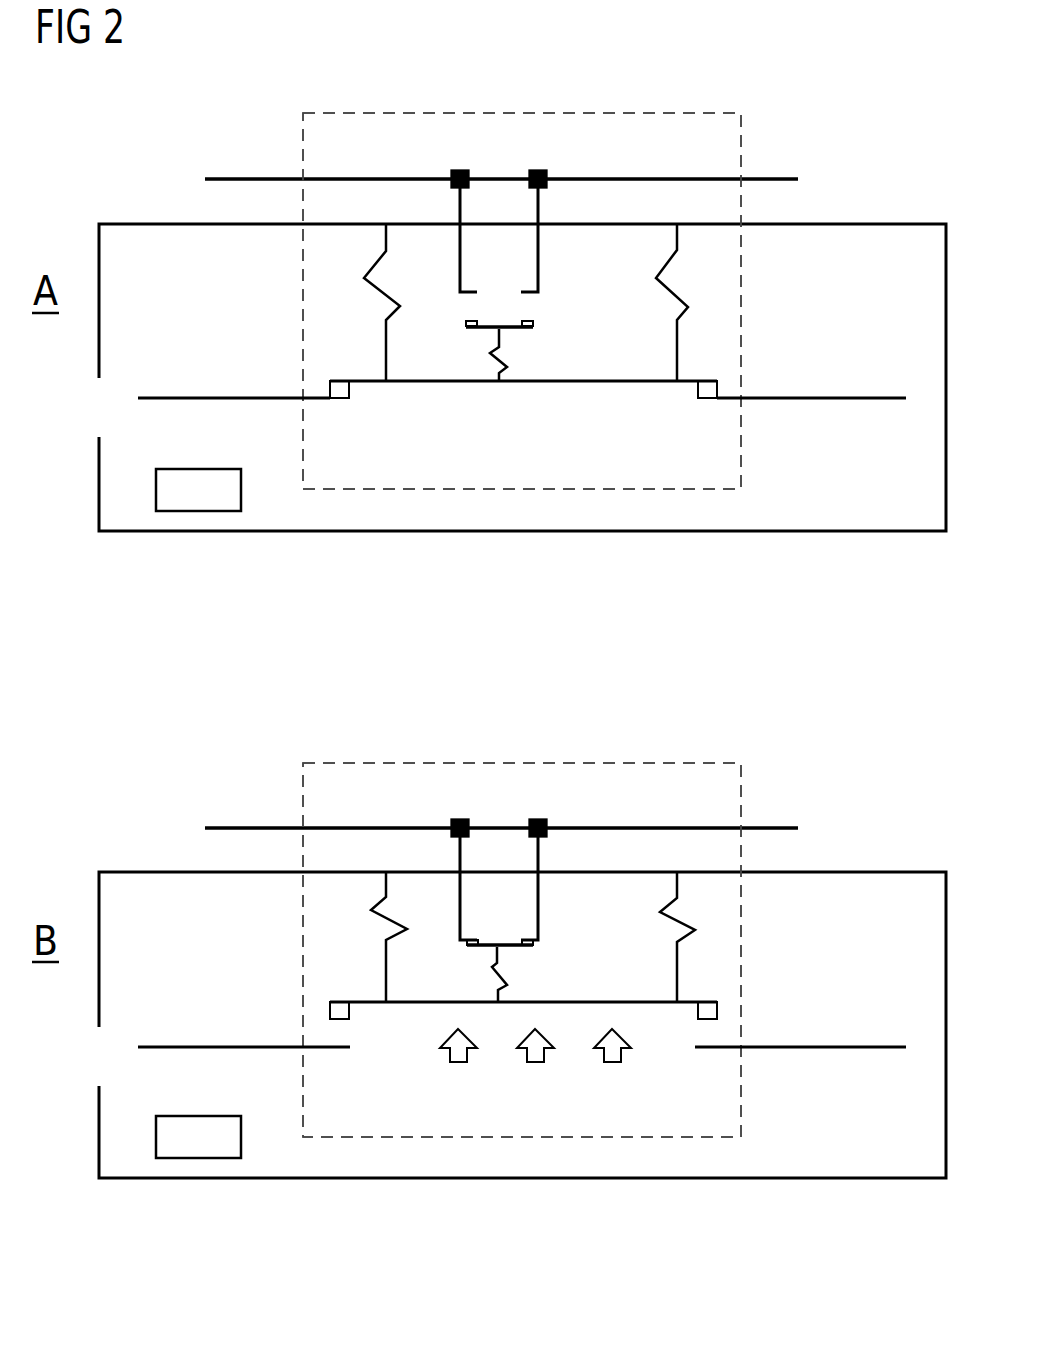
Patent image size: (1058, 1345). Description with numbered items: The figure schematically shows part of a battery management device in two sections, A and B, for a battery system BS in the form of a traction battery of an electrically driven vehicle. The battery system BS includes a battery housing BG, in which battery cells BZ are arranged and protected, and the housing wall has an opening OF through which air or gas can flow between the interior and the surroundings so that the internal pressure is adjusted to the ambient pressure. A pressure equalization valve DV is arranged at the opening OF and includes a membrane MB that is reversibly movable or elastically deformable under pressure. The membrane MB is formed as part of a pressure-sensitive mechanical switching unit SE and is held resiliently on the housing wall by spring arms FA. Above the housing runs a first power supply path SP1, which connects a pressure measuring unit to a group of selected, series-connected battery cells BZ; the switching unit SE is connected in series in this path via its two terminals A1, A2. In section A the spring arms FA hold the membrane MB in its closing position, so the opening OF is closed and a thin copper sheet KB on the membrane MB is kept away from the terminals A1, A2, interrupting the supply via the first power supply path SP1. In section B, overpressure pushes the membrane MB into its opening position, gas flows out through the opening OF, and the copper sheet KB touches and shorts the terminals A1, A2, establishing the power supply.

The battery housing BG is at (893, 224).
The battery system BS is at (158, 176).
The first power supply path SP1 is at (243, 179).
The first electrical terminal A1 is at (462, 536).
The second electrical terminal A2 is at (537, 536).
The pressure equalization valve DV is at (264, 309).
The pressure-sensitive mechanical switching unit SE is at (742, 452).
The spring arms FA is at (670, 292).
The copper sheet KB is at (497, 330).
The membrane MB is at (560, 384).
The openings OF is at (112, 387).
The battery cells BZ is at (216, 505).